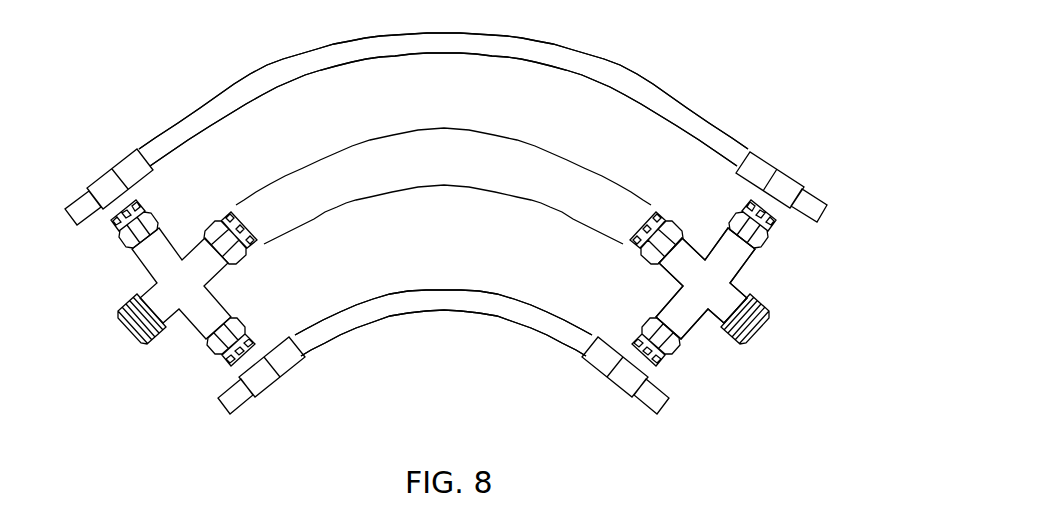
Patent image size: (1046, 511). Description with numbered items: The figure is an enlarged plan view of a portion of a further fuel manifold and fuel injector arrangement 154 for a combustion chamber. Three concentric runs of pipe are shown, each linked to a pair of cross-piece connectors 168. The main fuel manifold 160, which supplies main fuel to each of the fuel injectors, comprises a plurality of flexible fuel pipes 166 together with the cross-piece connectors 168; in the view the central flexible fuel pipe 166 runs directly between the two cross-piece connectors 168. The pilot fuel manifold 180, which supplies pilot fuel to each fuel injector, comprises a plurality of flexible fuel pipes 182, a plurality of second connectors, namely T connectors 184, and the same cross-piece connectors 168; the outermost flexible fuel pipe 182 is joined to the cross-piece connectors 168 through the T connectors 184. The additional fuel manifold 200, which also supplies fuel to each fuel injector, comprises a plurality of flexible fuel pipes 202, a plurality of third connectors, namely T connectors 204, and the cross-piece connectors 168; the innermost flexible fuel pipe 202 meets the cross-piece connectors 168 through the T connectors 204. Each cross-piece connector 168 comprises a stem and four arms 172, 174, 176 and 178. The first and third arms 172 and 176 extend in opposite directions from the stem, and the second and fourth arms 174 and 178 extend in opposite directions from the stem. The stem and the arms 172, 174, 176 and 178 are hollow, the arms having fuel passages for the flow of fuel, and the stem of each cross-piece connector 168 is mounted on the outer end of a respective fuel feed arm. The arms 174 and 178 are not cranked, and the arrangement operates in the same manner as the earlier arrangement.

The fuel manifold and fuel injector arrangement 154 is at (450, 229).
The main fuel manifold 160 is at (737, 277).
The flexible fuel pipes 166 is at (605, 180).
The cross-piece connectors 168 is at (192, 287).
The first arm 172 is at (197, 257).
The second arm 174 is at (153, 257).
The third arm 176 is at (163, 305).
The fourth arm 178 is at (203, 309).
The pilot fuel manifold 180 is at (735, 139).
The flexible fuel pipes 182 is at (583, 58).
The T connectors 184 is at (103, 186).
The additional fuel manifold 200 is at (588, 340).
The flexible fuel pipes 202 is at (433, 303).
The T connectors 204 is at (258, 383).